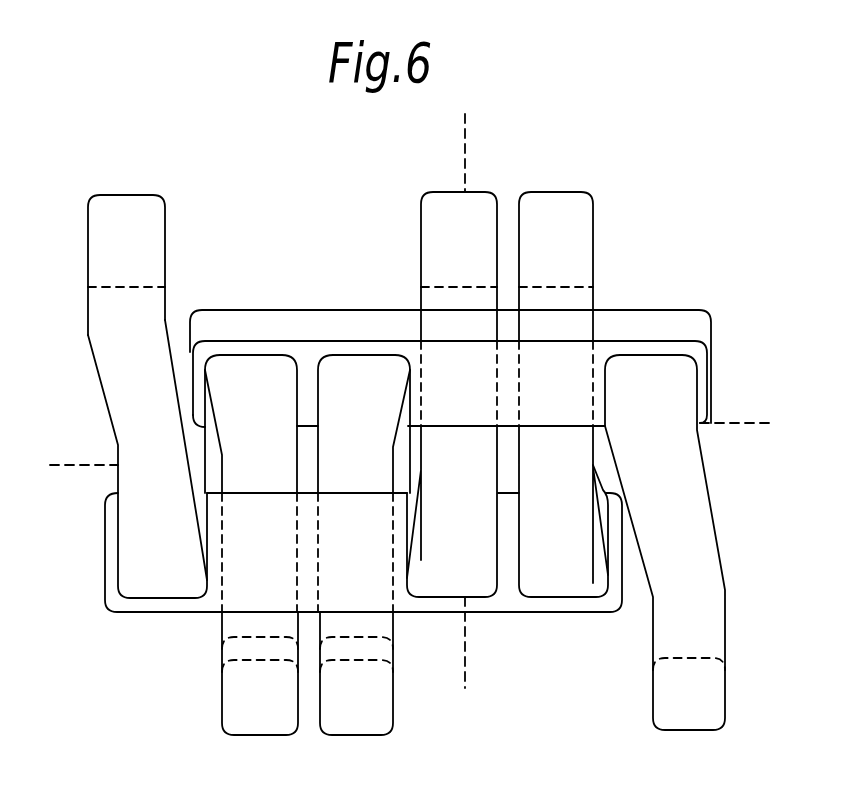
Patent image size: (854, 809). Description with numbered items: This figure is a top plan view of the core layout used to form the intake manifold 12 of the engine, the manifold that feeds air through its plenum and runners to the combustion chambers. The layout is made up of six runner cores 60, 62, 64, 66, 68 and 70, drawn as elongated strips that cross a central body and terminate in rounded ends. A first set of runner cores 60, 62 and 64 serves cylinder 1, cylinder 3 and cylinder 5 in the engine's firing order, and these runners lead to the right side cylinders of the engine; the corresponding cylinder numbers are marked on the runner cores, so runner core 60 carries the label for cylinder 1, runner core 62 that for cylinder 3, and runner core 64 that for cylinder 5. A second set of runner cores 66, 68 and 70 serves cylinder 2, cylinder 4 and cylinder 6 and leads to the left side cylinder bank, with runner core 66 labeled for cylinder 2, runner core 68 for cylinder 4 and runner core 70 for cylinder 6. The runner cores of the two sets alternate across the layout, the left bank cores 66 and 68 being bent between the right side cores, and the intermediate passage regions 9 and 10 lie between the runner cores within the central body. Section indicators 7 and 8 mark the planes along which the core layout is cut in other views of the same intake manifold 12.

The intake manifold 12 is at (66, 482).
The runner core 60 is at (114, 396).
The runner core 62 is at (417, 391).
The runner core 64 is at (597, 394).
The runner core 66 is at (223, 547).
The runner core 68 is at (387, 558).
The runner core 70 is at (657, 543).
The cylinder 1 is at (147, 396).
The cylinder 2 is at (251, 545).
The cylinder 3 is at (452, 394).
The cylinder 4 is at (422, 746).
The cylinder 5 is at (563, 394).
The cylinder 6 is at (625, 716).
The lower terminal passages 9 is at (307, 552).
The upper terminal passages 10 is at (507, 383).
The section line 7- 7 is at (432, 688).
The section line 8- 8 is at (772, 386).